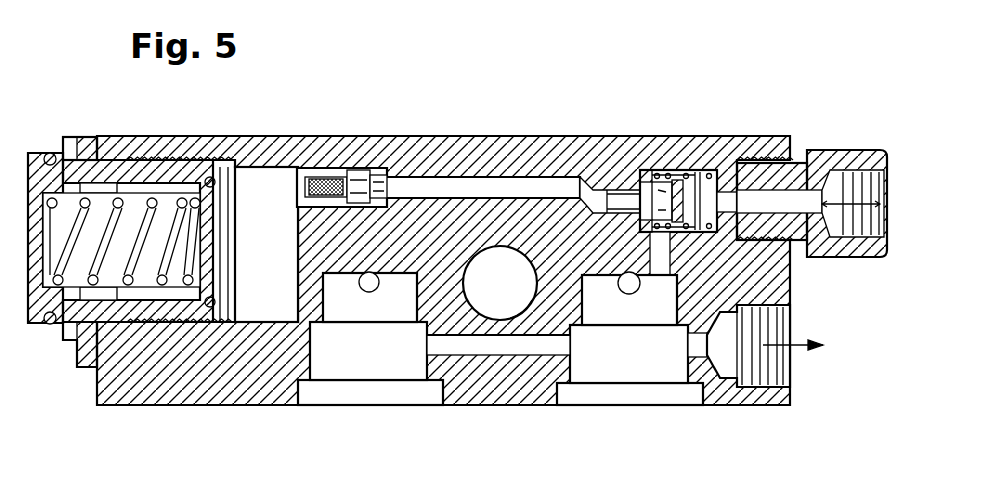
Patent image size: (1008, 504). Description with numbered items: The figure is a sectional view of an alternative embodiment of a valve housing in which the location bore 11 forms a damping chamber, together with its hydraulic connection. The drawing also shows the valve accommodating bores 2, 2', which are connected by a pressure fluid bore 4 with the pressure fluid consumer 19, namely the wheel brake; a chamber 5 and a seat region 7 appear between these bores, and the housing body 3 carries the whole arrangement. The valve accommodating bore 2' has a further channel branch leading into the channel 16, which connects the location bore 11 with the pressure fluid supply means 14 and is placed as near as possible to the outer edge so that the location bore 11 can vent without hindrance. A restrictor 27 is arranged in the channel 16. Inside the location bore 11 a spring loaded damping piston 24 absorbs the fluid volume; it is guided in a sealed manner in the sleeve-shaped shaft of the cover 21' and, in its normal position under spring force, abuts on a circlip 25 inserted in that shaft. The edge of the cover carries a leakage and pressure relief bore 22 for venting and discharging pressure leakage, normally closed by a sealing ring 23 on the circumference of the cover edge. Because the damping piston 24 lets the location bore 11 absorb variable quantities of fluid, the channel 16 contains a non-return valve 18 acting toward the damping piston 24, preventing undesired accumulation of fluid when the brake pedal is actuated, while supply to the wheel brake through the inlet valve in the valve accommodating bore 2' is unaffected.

The valve accommodating bore 2 is at (370, 369).
The valve accommodating bore 2' is at (630, 369).
The valve housing body 3 is at (163, 373).
The pressure fluid bore 4 is at (473, 343).
The valve chamber 5 is at (491, 303).
The valve seat 7 is at (520, 302).
The location bore 11 is at (238, 294).
The pressure fluid supply means 14 is at (833, 200).
The channel 16 is at (541, 186).
The non-return valve 18 is at (654, 190).
The pressure fluid consumer 19 is at (795, 347).
The cover 21' is at (47, 116).
The leakage and pressure relief bore 22 is at (48, 312).
The sealing ring 23 is at (52, 152).
The damping piston 24 is at (157, 172).
The circlip 25 is at (211, 177).
The restrictor 27 is at (390, 187).